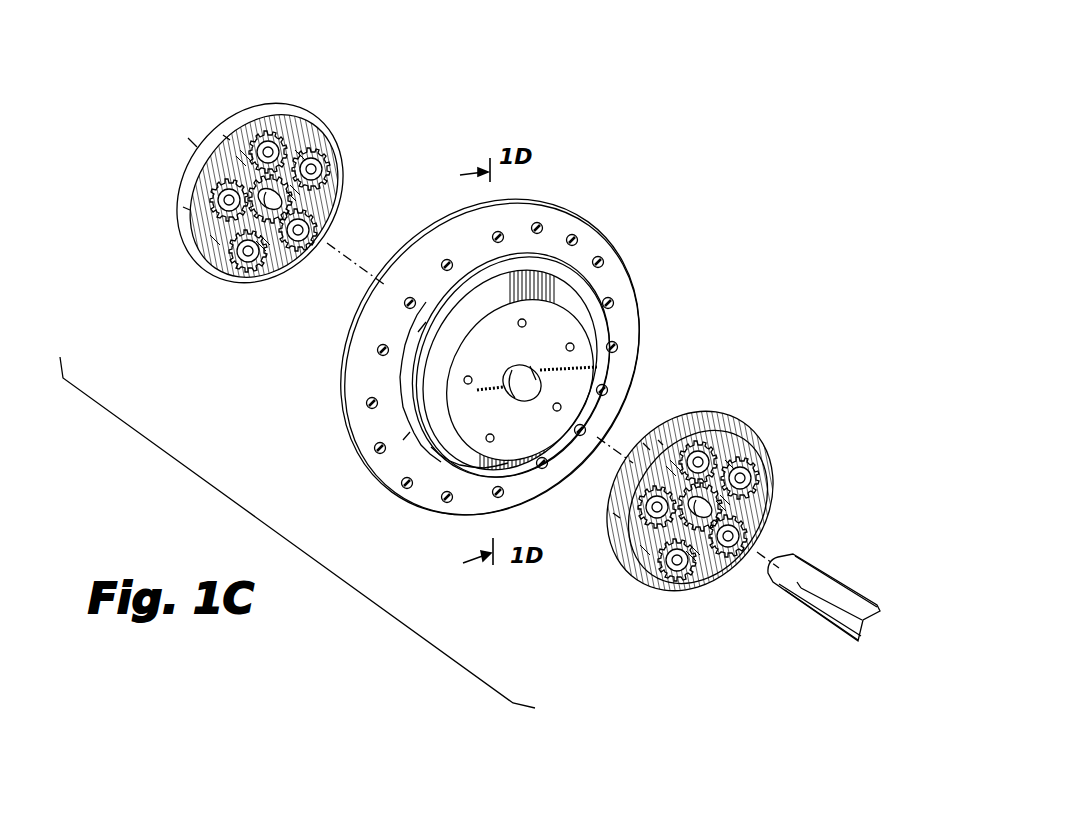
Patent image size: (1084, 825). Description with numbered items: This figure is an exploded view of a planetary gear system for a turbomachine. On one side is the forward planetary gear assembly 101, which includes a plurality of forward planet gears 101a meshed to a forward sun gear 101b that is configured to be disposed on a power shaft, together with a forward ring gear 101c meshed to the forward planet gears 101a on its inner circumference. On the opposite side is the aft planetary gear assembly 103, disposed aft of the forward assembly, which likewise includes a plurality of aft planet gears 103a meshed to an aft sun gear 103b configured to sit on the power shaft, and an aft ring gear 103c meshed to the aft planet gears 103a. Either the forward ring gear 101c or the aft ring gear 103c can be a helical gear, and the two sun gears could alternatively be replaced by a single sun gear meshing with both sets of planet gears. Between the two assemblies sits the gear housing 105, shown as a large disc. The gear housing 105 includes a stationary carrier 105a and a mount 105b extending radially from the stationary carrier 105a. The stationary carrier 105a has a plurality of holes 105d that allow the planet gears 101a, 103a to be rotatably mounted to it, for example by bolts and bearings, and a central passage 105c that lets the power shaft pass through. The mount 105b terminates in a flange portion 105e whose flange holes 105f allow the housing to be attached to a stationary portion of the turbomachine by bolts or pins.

The forward planetary gear assembly 101 is at (343, 104).
The forward planet gears 101a is at (217, 270).
The forward sun gear 101b is at (345, 180).
The forward ring gear 101c is at (277, 277).
The aft planetary gear assembly 103 is at (782, 431).
The aft planet gears 103a is at (708, 443).
The aft sun gear 103b is at (773, 490).
The aft ring gear 103c is at (707, 580).
The gear housing 105 is at (389, 260).
The stationary carrier 105a is at (542, 430).
The mount 105b is at (568, 272).
The central passage 105c is at (518, 367).
The holes 105d is at (575, 347).
The flange portion 105e is at (425, 492).
The flange holes 105f is at (547, 230).